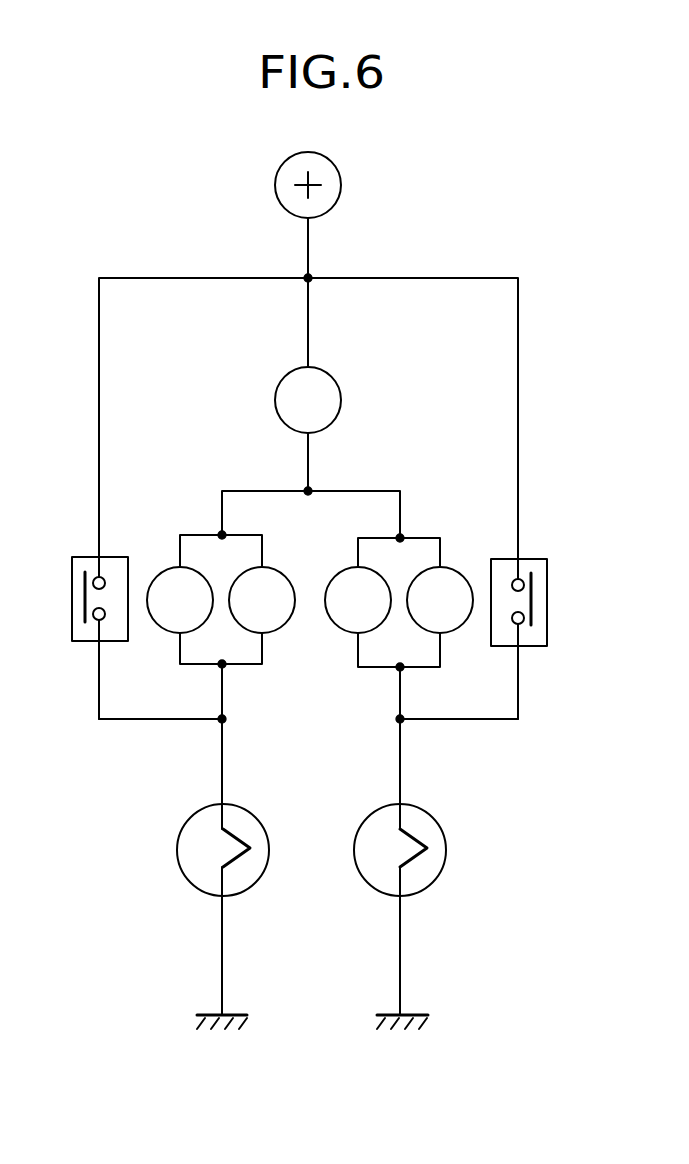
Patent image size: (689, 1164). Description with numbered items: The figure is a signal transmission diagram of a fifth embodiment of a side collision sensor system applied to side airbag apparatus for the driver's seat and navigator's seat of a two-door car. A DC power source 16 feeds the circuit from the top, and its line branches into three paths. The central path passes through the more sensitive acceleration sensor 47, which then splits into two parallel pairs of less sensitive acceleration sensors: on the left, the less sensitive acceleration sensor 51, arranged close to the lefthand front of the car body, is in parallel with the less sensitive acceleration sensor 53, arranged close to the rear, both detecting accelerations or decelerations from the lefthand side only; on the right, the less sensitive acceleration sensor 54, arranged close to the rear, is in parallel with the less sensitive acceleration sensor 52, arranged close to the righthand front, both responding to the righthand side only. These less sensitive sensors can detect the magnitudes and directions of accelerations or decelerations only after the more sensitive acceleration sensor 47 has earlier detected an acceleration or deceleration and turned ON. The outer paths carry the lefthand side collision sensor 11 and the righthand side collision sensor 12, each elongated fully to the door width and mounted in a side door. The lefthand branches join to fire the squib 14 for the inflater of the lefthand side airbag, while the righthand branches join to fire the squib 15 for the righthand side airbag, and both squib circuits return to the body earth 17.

The DC power source 16 is at (341, 181).
The more sensitive acceleration sensor 47 is at (334, 379).
The less sensitive acceleration sensor 51 is at (168, 574).
The less sensitive acceleration sensor 53 is at (284, 572).
The less sensitive acceleration sensor 54 is at (337, 578).
The less sensitive acceleration sensor 52 is at (452, 578).
The lefthand side collision sensor 11 is at (84, 560).
The righthand side collision sensor 12 is at (540, 566).
The squib 14 is at (250, 822).
The squib 15 is at (422, 820).
The body earth 17 is at (235, 1013).